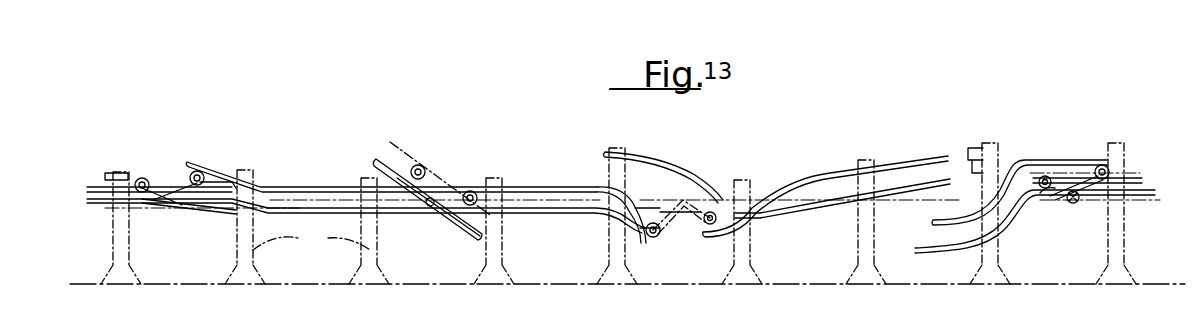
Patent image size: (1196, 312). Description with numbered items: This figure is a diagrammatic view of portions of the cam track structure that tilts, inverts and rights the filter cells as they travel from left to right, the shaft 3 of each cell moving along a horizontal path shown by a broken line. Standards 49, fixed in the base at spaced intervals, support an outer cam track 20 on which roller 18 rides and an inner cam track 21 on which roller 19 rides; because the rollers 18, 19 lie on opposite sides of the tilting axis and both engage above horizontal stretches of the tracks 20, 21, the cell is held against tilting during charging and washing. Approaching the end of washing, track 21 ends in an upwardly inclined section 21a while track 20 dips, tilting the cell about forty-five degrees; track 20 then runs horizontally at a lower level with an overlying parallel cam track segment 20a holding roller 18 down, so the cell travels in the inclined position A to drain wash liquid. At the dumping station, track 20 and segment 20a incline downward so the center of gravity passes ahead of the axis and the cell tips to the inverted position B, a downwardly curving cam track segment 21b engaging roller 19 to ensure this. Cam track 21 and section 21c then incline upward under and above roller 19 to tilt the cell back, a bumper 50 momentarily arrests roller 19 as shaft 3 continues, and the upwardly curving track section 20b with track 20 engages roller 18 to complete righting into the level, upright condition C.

The shaft 3 is at (430, 207).
The roller 18 is at (471, 191).
The roller 19 is at (418, 165).
The outer cam track 20 is at (94, 187).
The overlying parallel cam track segment 20a is at (263, 185).
The track section 20b is at (1013, 158).
The inner cam track 21 is at (98, 203).
The upwardly inclined section 21a is at (155, 200).
The downwardly curving cam track segment 21b is at (690, 163).
The cam track section 21c is at (795, 173).
The standards 49 is at (311, 241).
The bumper 50 is at (967, 157).
The inclined position A is at (440, 175).
The inverted position B is at (687, 224).
The level and upright condition C is at (1062, 166).